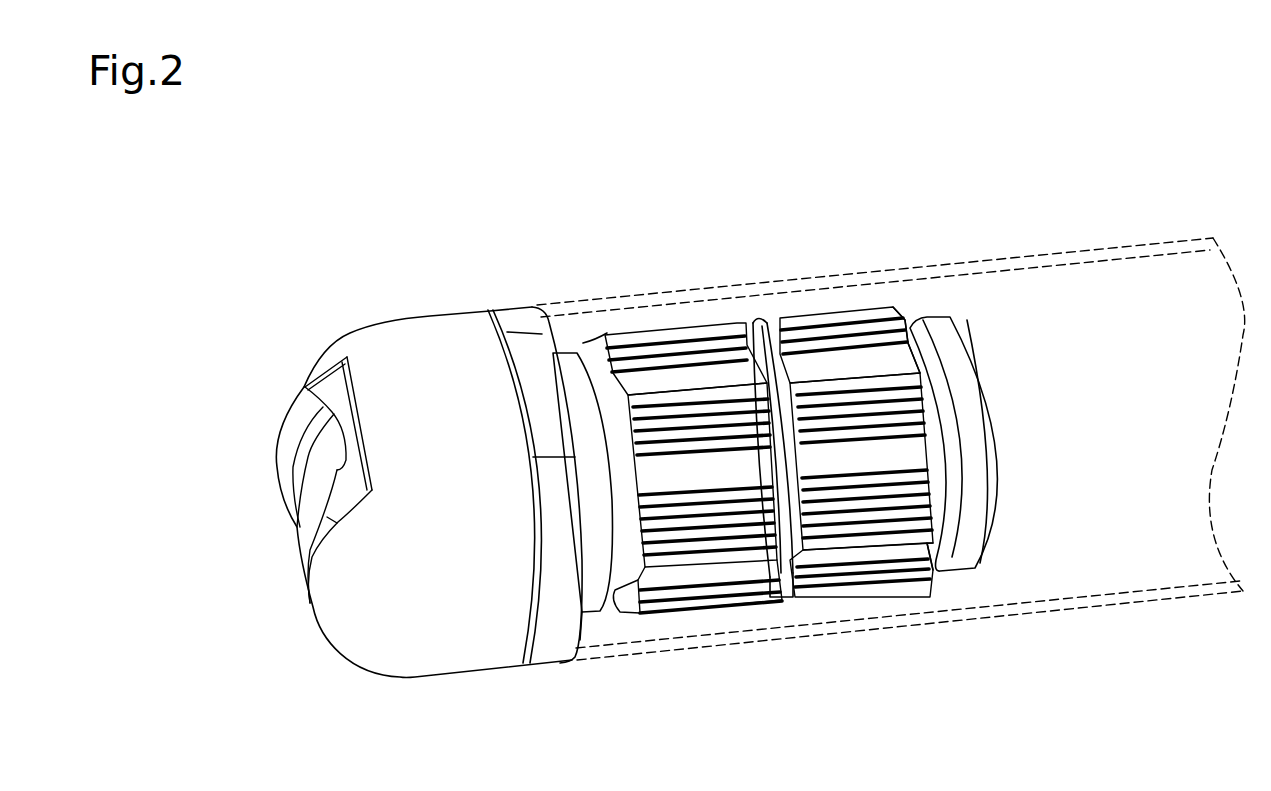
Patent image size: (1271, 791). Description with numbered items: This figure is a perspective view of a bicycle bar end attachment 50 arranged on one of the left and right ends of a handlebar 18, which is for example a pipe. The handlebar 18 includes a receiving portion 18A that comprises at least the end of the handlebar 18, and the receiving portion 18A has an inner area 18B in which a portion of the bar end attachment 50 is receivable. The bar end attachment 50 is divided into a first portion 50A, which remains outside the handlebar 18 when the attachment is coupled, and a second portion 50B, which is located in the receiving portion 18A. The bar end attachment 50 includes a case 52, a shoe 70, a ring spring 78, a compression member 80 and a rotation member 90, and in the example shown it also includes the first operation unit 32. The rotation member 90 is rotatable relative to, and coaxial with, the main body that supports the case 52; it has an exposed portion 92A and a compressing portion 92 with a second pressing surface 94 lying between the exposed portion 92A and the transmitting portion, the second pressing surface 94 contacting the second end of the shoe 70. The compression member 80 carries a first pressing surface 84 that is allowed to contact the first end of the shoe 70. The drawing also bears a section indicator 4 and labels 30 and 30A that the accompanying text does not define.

The section line 4 is at (262, 432).
The handlebar 18 is at (891, 480).
The receiving portion 18A is at (1110, 607).
The inner area 18B is at (1117, 563).
The capsule 30 is at (362, 182).
The vane portion 30A is at (285, 418).
The first operation unit 32 is at (315, 246).
The bar end attachment 50 is at (1008, 192).
The first portion 50A is at (570, 667).
The second portion 50B is at (998, 625).
The case 52 is at (425, 318).
The shoe 70 is at (823, 308).
The ring spring 78 is at (757, 325).
The compression member 80 is at (940, 318).
The first pressing surface 84 is at (910, 325).
The rotation member 90 is at (580, 180).
The compressing portion 92 is at (545, 242).
The exposed portion 92A is at (507, 312).
The second pressing surface 94 is at (603, 322).